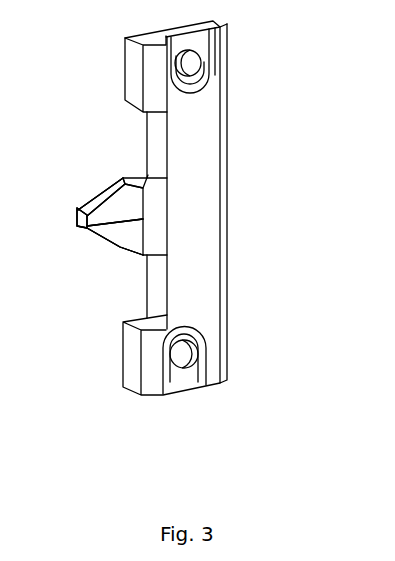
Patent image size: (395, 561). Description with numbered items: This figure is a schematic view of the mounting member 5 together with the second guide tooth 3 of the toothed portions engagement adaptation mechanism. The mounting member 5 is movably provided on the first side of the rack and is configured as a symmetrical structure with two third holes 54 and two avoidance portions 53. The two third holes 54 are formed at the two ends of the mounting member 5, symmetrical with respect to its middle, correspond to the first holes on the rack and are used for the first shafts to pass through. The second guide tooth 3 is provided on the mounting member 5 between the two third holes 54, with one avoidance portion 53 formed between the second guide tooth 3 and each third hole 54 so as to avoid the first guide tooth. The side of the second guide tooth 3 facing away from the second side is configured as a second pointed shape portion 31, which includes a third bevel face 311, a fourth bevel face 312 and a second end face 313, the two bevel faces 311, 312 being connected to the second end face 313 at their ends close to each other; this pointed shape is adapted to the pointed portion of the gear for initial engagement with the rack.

The mounting member 5 is at (203, 128).
The avoidance portion 53 is at (152, 147).
The third hole 54 is at (183, 67).
The second guide tooth 3 is at (77, 214).
The second pointed shape portion 31 is at (298, 170).
The third bevel face 311 is at (113, 205).
The fourth bevel face 312 is at (117, 235).
The second end face 313 is at (138, 222).